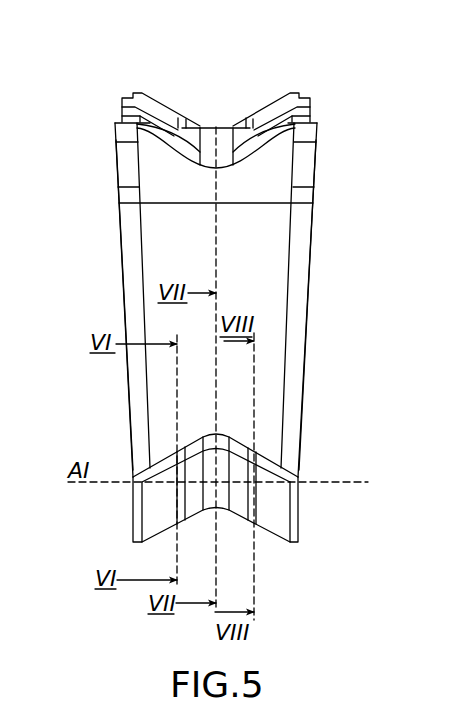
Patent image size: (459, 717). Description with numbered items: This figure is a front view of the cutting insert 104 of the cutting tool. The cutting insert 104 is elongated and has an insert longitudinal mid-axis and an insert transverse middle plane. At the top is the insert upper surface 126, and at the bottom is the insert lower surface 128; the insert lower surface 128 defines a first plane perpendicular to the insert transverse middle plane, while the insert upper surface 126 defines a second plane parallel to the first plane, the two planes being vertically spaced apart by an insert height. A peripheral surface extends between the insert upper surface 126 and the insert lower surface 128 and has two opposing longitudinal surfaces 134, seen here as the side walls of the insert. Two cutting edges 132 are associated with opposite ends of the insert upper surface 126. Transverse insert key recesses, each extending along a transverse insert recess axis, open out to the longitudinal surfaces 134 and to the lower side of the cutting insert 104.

The cutting insert 104 is at (229, 86).
The insert upper surface 126 is at (262, 106).
The insert lower surface 128 is at (146, 548).
The cutting edges 132 is at (200, 128).
The longitudinal surfaces 134 is at (118, 267).